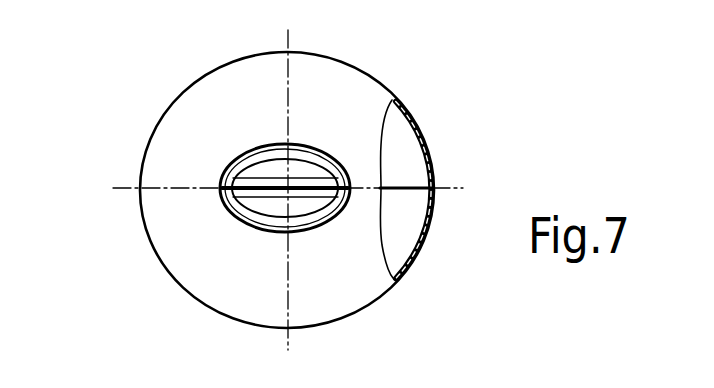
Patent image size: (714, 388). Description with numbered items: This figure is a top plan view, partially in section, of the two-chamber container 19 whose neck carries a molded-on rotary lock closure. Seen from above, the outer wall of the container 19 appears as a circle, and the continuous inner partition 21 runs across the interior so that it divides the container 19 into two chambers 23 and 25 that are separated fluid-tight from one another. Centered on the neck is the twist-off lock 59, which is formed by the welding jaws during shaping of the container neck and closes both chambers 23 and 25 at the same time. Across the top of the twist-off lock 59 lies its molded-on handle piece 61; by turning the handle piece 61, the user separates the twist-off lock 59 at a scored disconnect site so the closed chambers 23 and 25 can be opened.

The container 19 is at (168, 277).
The inner partition 21 is at (403, 185).
The chamber 23 is at (400, 222).
The chamber 25 is at (395, 143).
The twist-off lock 59 is at (275, 207).
The handle piece 61 is at (312, 193).